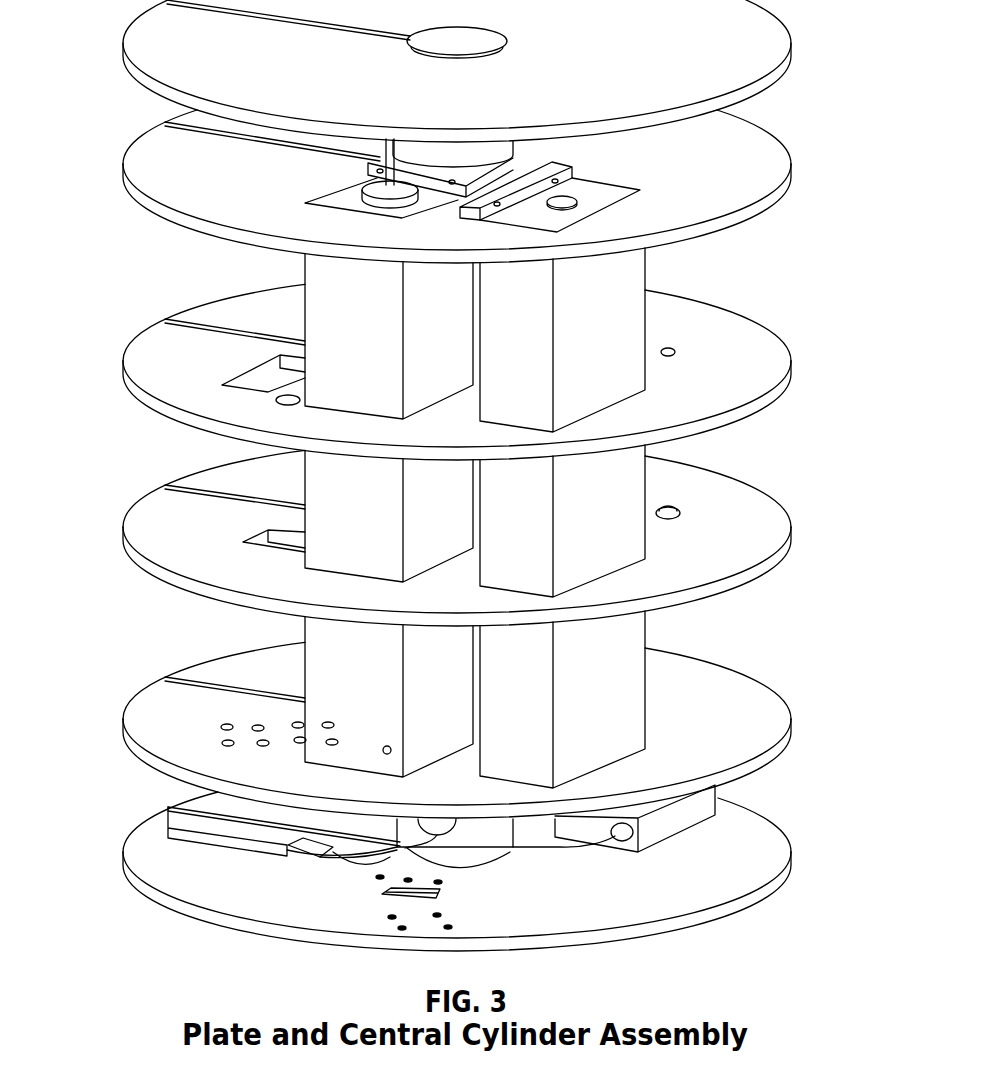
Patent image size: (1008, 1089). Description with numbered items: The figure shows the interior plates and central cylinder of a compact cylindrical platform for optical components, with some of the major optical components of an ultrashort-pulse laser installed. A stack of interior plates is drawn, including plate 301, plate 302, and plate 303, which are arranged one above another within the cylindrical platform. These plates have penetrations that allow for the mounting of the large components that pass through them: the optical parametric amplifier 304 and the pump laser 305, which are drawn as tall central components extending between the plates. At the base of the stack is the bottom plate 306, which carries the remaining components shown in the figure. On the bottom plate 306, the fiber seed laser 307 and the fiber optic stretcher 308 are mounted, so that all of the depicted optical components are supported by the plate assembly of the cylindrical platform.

The plate 301 is at (732, 172).
The plate 302 is at (730, 357).
The plate 303 is at (735, 537).
The optical parametric amplifier 304 is at (603, 710).
The pump laser 305 is at (362, 495).
The bottom plate 306 is at (722, 867).
The fiber seed laser 307 is at (692, 803).
The fiber optic stretcher 308 is at (205, 838).